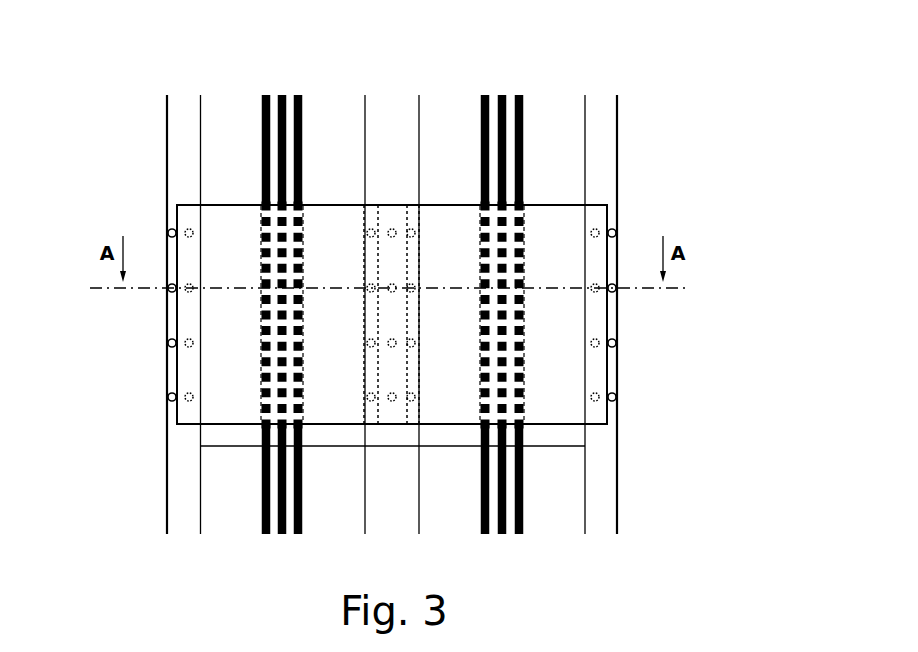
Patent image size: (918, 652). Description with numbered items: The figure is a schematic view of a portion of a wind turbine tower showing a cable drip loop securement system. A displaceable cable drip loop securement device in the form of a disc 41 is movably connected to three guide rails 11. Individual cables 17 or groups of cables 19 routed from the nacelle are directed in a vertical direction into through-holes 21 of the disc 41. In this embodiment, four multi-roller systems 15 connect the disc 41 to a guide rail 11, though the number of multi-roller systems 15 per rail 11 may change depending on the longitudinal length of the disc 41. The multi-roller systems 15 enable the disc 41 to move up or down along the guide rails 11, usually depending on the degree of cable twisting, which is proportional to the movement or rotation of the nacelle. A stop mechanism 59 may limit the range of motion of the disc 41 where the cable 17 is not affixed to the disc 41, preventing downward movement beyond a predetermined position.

The guide rail 11 is at (171, 111).
The multi-roller system 15 is at (146, 396).
The cable 17 is at (262, 534).
The group of cables 19 is at (519, 74).
The through-hole 21 is at (523, 222).
The disc 41 is at (617, 372).
The stop mechanism 59 is at (565, 437).